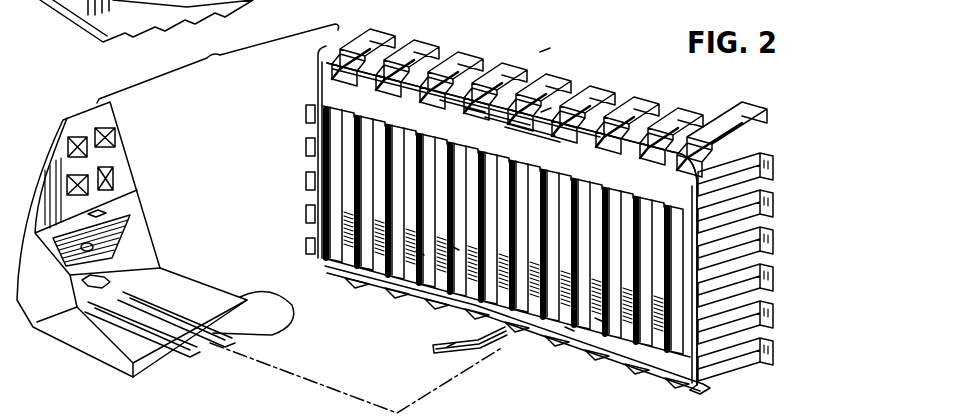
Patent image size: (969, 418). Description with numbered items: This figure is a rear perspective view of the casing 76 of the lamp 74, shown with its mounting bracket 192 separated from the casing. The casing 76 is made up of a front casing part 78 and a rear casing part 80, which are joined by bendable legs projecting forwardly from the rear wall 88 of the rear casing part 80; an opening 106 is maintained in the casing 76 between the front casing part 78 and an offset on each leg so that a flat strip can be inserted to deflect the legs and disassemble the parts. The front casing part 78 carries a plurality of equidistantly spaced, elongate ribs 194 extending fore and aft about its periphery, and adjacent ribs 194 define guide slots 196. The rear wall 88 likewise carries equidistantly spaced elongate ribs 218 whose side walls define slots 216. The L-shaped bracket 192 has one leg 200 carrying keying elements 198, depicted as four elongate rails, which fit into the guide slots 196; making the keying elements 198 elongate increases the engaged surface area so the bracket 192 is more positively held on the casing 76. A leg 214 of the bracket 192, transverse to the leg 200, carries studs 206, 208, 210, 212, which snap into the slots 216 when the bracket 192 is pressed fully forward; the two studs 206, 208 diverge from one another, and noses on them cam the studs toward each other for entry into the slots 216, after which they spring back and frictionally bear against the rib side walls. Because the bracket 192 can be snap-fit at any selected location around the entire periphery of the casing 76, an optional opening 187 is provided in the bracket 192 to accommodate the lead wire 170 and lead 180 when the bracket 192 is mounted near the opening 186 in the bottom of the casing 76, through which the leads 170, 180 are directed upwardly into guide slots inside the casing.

The lamp 74 is at (622, 38).
The casing 76 is at (500, 47).
The front casing part 78 is at (707, 100).
The rear casing part 80 is at (688, 295).
The rear wall 88 is at (427, 137).
The opening 106 is at (313, 82).
The lead wire 170 is at (450, 347).
The lead 180 is at (447, 355).
The opening 186 is at (500, 352).
The opening 187 is at (100, 215).
The L-shaped bracket 192 is at (150, 240).
The elongate ribs 194 is at (730, 313).
The guide slots 196 is at (548, 110).
The keying elements 198 is at (266, 314).
The leg 200 is at (120, 357).
The stud 206 is at (100, 128).
The stud 208 is at (80, 135).
The stud 210 is at (110, 175).
The stud 212 is at (67, 182).
The leg 214 is at (53, 203).
The slots 216 is at (455, 250).
The elongate ribs 218 is at (600, 320).